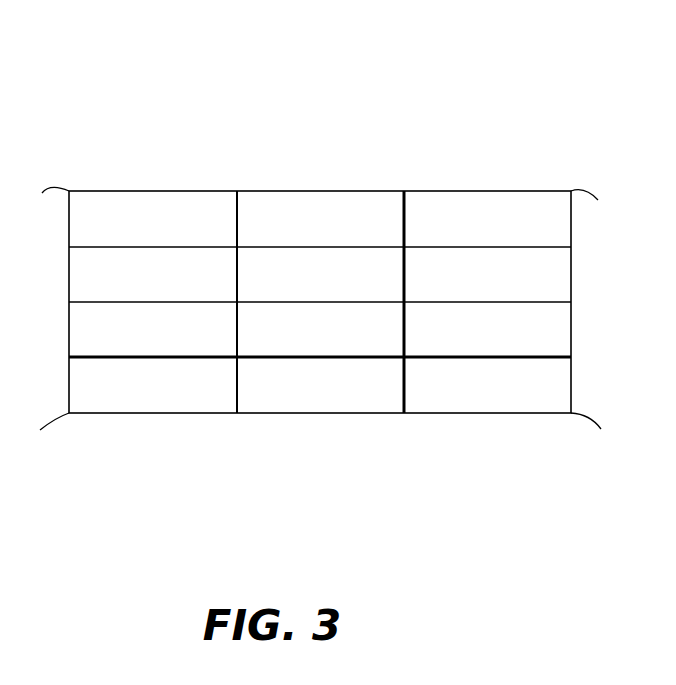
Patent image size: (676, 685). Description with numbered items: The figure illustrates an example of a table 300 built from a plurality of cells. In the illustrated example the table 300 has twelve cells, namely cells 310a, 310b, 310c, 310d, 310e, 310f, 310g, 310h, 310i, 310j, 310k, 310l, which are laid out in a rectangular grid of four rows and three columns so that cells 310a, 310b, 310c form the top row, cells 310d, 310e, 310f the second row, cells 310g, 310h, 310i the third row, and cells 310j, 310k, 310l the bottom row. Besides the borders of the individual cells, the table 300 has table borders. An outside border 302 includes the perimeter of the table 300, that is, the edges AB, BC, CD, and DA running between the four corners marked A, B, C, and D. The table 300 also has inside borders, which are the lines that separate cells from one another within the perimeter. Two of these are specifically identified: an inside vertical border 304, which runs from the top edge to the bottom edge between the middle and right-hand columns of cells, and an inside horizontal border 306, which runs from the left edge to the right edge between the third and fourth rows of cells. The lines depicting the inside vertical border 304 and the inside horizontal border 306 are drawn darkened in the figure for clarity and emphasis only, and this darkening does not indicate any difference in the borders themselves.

The table 300 is at (657, 52).
The outside border 302 is at (275, 178).
The inside vertical border 304 is at (405, 203).
The inside horizontal border 306 is at (285, 359).
The cell 310a is at (153, 219).
The cell 310b is at (320, 219).
The cell 310c is at (487, 219).
The cell 310d is at (153, 274).
The cell 310e is at (320, 274).
The cell 310f is at (487, 274).
The cell 310g is at (153, 329).
The cell 310h is at (320, 329).
The cell 310i is at (487, 329).
The cell 310j is at (153, 385).
The cell 310k is at (320, 385).
The cell 310l is at (487, 385).